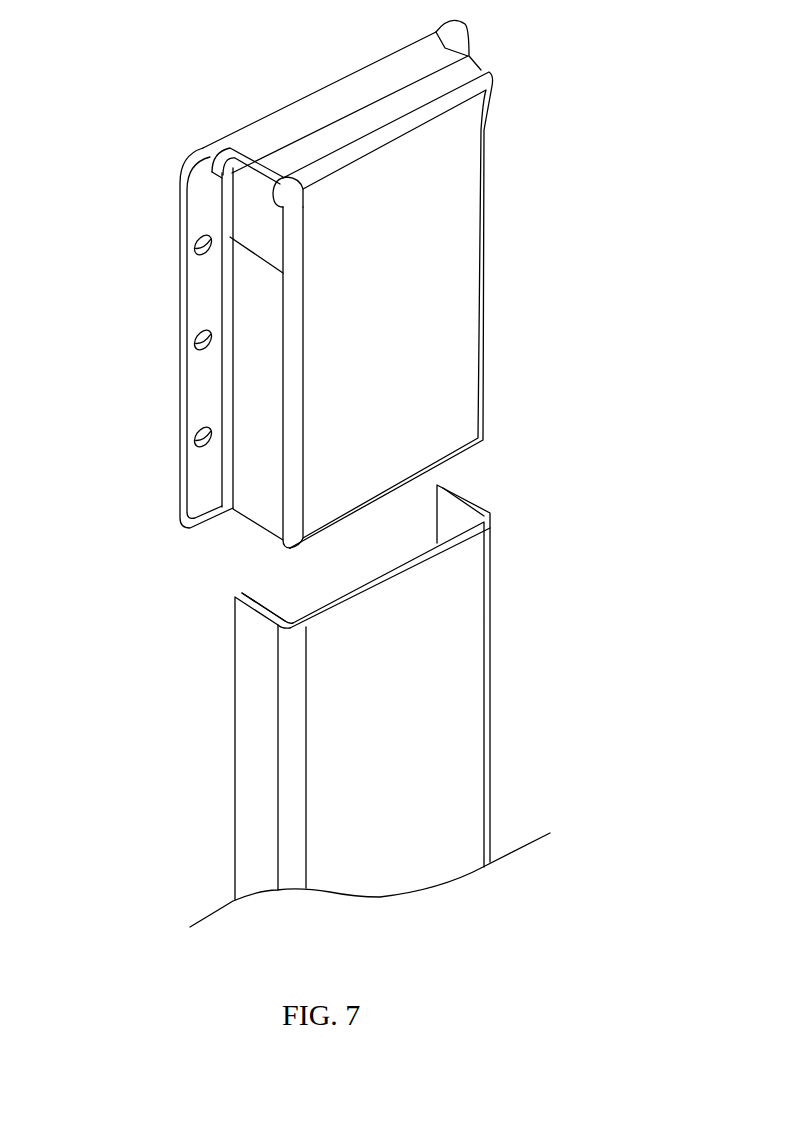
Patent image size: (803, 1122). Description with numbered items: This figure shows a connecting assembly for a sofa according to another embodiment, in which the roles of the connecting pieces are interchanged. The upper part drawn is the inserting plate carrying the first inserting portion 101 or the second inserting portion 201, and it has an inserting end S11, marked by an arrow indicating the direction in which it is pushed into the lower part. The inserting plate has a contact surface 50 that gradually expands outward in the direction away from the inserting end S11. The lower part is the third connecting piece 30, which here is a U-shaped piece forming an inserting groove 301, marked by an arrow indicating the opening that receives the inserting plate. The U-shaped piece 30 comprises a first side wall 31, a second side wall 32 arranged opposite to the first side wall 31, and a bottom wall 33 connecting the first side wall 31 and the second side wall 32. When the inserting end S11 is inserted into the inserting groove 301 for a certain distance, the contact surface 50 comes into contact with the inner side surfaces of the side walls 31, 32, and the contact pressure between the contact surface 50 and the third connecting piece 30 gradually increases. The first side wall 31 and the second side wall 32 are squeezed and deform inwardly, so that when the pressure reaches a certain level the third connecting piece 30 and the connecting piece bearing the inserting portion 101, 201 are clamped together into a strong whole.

The contact surface 50 is at (252, 223).
The first inserting portion 101 is at (362, 284).
The second inserting portion 201 is at (362, 284).
The inserting end S11 is at (500, 465).
The third connecting piece 30 is at (321, 706).
The first side wall 31 is at (460, 522).
The second side wall 32 is at (250, 700).
The bottom wall 33 is at (467, 698).
The inserting groove 301 is at (290, 586).